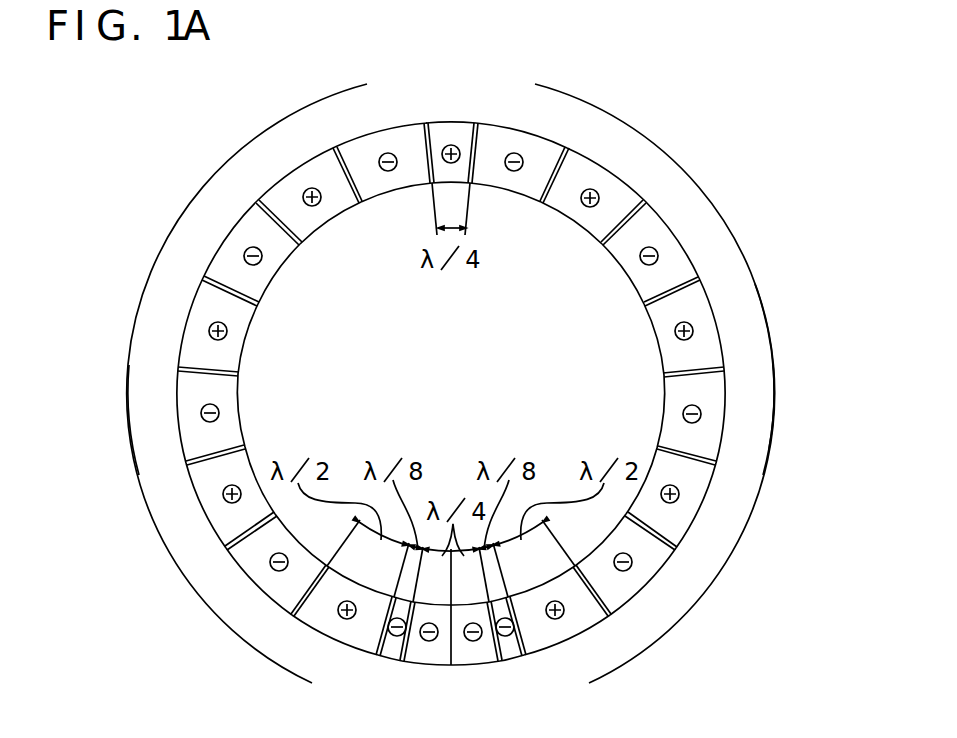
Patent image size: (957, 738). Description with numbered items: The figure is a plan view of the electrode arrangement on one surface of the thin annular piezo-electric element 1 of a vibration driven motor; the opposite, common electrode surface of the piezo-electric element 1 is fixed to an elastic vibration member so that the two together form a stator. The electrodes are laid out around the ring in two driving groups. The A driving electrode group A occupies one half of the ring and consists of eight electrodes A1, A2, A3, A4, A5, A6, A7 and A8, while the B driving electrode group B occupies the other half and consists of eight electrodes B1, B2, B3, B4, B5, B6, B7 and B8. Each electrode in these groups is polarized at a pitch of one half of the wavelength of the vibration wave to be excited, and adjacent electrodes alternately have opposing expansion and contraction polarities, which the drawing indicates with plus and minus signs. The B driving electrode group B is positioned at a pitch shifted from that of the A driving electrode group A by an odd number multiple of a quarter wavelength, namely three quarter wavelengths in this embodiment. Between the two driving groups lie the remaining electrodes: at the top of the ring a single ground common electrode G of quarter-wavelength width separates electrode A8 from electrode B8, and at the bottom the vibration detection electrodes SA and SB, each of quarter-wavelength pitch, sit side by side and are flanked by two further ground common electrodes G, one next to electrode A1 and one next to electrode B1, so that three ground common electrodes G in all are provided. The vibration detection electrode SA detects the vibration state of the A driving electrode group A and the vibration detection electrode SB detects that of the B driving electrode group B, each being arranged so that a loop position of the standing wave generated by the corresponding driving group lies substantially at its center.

The piezo-electric element 1 is at (710, 347).
The A driving electrode group A is at (773, 402).
The B driving electrode group B is at (128, 396).
The ground common electrode G is at (452, 122).
The vibration detection electrode SA is at (474, 645).
The vibration detection electrode SB is at (428, 645).
The A driving electrode A1 is at (562, 624).
The A driving electrode A2 is at (632, 571).
The A driving electrode A3 is at (692, 503).
The A driving electrode A4 is at (713, 415).
The A driving electrode A5 is at (705, 326).
The A driving electrode A6 is at (666, 244).
The A driving electrode A7 is at (634, 135).
The A driving electrode A8 is at (535, 85).
The B driving electrode B1 is at (340, 624).
The B driving electrode B2 is at (265, 576).
The B driving electrode B3 is at (219, 499).
The B driving electrode B4 is at (189, 415).
The B driving electrode B5 is at (197, 325).
The B driving electrode B6 is at (189, 211).
The B driving electrode B7 is at (268, 135).
The B driving electrode B8 is at (368, 87).